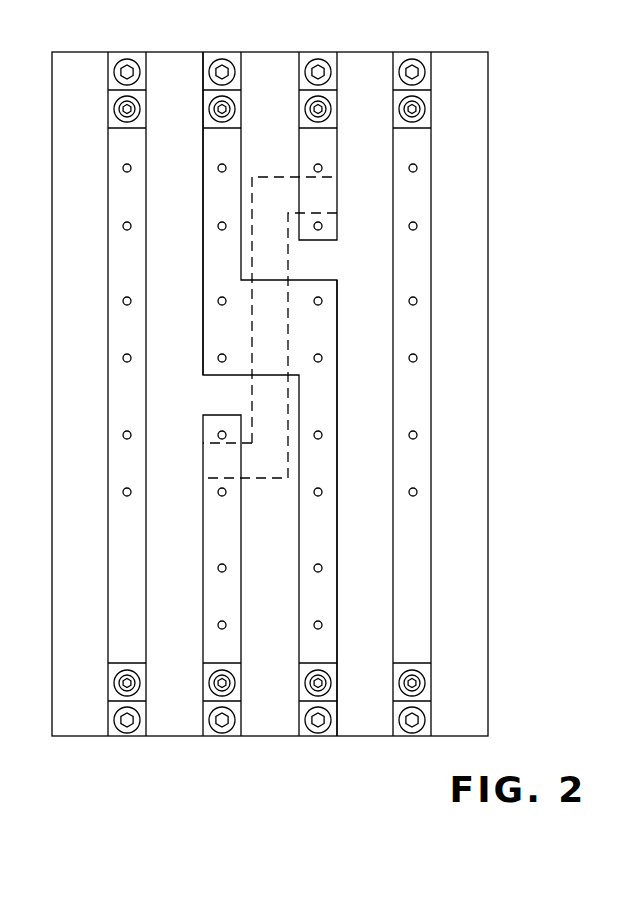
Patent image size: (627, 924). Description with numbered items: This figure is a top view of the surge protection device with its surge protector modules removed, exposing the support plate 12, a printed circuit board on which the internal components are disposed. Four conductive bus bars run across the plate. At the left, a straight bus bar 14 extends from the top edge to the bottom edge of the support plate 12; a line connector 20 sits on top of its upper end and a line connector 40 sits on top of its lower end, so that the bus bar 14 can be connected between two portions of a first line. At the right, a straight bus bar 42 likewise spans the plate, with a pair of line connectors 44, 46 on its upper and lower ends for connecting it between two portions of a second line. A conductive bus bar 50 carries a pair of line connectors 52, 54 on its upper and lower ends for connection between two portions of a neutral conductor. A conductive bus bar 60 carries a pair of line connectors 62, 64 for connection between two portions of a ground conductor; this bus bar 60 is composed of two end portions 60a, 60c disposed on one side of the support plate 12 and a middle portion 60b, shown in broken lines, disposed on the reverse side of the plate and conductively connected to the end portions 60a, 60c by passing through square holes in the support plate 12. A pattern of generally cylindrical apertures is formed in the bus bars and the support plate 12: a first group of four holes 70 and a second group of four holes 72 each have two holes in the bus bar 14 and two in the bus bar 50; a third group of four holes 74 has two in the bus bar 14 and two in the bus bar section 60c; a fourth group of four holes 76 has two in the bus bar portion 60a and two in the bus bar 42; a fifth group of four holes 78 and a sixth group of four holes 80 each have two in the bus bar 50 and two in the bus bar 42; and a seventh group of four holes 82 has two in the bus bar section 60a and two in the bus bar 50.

The support plate 12 is at (468, 390).
The bus bar 14 is at (108, 557).
The line connector 20 is at (100, 68).
The line connector 40 is at (133, 740).
The bus bar 42 is at (433, 515).
The line connector 44 is at (438, 70).
The line connector 46 is at (437, 714).
The bus bar 50 is at (202, 140).
The line connector 52 is at (245, 70).
The line connector 54 is at (311, 740).
The bus bar 60 is at (203, 512).
The end portion of bus bar 60a is at (327, 150).
The middle portion of bus bar 60b is at (288, 258).
The end portion of bus bar 60c is at (228, 540).
The line connector 62 is at (340, 70).
The line connector 64 is at (236, 740).
The first group of four holes 70 is at (218, 168).
The second group of four holes 72 is at (218, 301).
The third group of four holes 74 is at (218, 435).
The fourth group of four holes 76 is at (409, 168).
The fifth group of four holes 78 is at (409, 301).
The sixth group of four holes 80 is at (322, 435).
The seventh group of four holes 82 is at (314, 568).